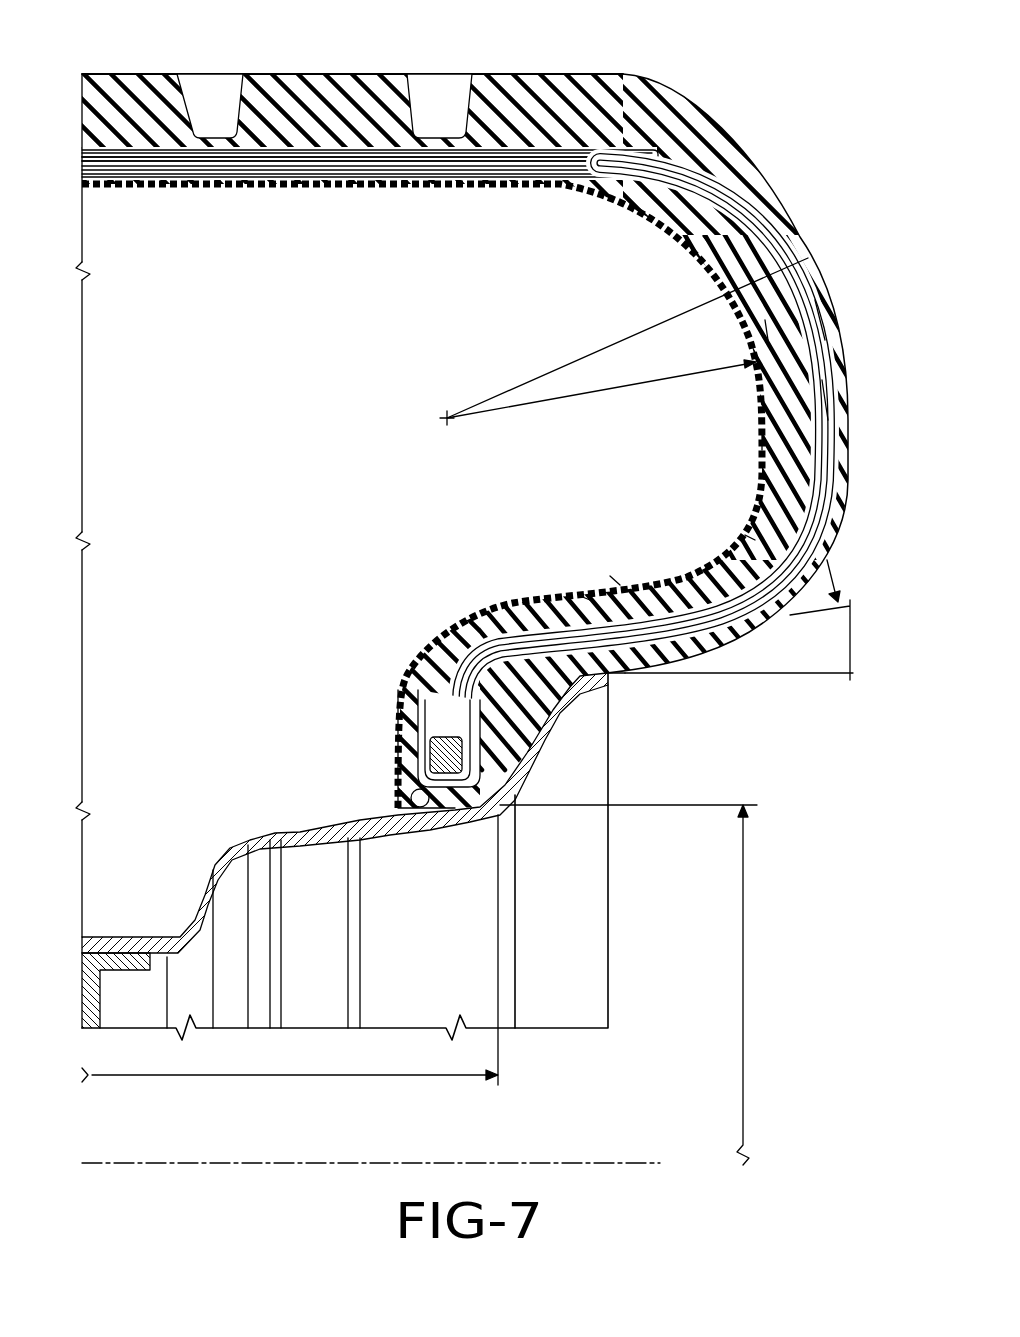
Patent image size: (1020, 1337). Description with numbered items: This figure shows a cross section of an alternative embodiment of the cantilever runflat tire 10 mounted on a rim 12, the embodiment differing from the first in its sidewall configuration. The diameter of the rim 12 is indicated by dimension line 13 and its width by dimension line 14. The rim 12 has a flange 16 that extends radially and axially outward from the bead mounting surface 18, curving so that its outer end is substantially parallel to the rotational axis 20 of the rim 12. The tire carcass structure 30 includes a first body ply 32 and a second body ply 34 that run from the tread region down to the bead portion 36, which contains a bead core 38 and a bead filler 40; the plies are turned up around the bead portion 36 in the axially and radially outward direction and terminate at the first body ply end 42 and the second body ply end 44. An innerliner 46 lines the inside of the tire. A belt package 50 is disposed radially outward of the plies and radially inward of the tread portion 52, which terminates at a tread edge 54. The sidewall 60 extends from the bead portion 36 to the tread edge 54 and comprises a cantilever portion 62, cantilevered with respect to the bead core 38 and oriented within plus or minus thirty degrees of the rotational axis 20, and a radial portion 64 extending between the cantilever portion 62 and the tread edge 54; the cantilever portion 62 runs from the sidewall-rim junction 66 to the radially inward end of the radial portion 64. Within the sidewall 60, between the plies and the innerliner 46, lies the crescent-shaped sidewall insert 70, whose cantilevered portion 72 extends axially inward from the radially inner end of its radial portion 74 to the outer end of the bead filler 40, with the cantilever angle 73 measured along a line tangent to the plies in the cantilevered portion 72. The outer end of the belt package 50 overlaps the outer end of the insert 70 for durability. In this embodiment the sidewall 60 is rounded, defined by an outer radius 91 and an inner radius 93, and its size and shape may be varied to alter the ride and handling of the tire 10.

The cantilever runflat tire 10 is at (732, 86).
The rim 12 is at (610, 903).
The dimension line 13 is at (748, 905).
The dimension line 14 is at (288, 1077).
The flange 16 is at (586, 690).
The bead mounting surface 18 is at (422, 808).
The rotational axis 20 is at (620, 1160).
The tire carcass structure 30 is at (266, 190).
The first body ply 32 is at (320, 178).
The second body ply 34 is at (375, 176).
The bead portion 36 is at (426, 720).
The bead core 38 is at (430, 757).
The bead filler 40 is at (458, 676).
The first body ply end 42 is at (830, 343).
The second body ply end 44 is at (836, 398).
The innerliner 46 is at (418, 181).
The belt package 50 is at (483, 146).
The tread portion 52 is at (335, 66).
The tread edge 54 is at (683, 100).
The sidewall 60 is at (748, 443).
The cantilever portion 62 is at (608, 568).
The radial portion 64 is at (733, 334).
The sidewall-rim junction 66 is at (620, 677).
The sidewall insert 70 is at (738, 538).
The cantilevered portion 72 is at (583, 595).
The cantilever angle 73 is at (848, 685).
The radial portion 74 is at (710, 246).
The outer radius 91 is at (552, 370).
The inner radius 93 is at (570, 402).